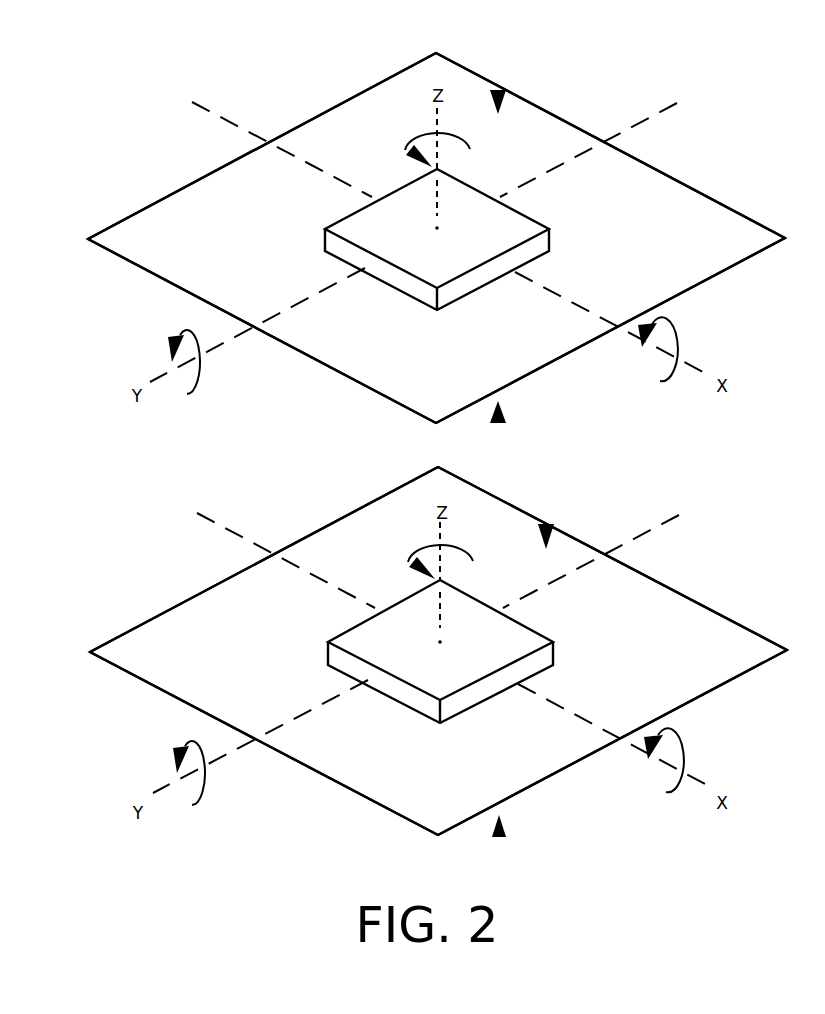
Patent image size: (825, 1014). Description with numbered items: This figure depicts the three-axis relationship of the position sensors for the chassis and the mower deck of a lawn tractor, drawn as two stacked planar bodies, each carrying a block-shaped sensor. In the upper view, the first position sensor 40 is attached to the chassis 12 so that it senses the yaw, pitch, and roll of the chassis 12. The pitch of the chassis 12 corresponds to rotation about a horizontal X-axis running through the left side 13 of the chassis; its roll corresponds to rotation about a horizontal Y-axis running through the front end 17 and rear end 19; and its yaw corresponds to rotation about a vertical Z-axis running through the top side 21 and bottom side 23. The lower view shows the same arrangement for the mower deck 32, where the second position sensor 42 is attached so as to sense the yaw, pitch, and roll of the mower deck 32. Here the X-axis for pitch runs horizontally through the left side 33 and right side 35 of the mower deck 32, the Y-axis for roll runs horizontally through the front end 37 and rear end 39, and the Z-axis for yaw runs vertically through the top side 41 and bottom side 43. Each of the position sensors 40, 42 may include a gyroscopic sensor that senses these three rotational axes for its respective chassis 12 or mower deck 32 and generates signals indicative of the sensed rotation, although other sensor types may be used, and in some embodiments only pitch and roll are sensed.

The chassis 12 is at (654, 256).
The left side of the chassis 13 is at (204, 178).
The front end of the chassis 17 is at (333, 369).
The rear end of the chassis 19 is at (673, 180).
The top side of the chassis 21 is at (499, 92).
The bottom side of the chassis 23 is at (498, 423).
The first position sensor 40 is at (426, 260).
The mower deck 32 is at (639, 651).
The left side of the mower deck 33 is at (546, 780).
The right side of the mower deck 35 is at (205, 592).
The front end of the mower deck 37 is at (335, 782).
The rear end of the mower deck 39 is at (675, 592).
The top side of the mower deck 41 is at (546, 524).
The second position sensor 42 is at (427, 675).
The bottom side of the mower deck 43 is at (499, 837).